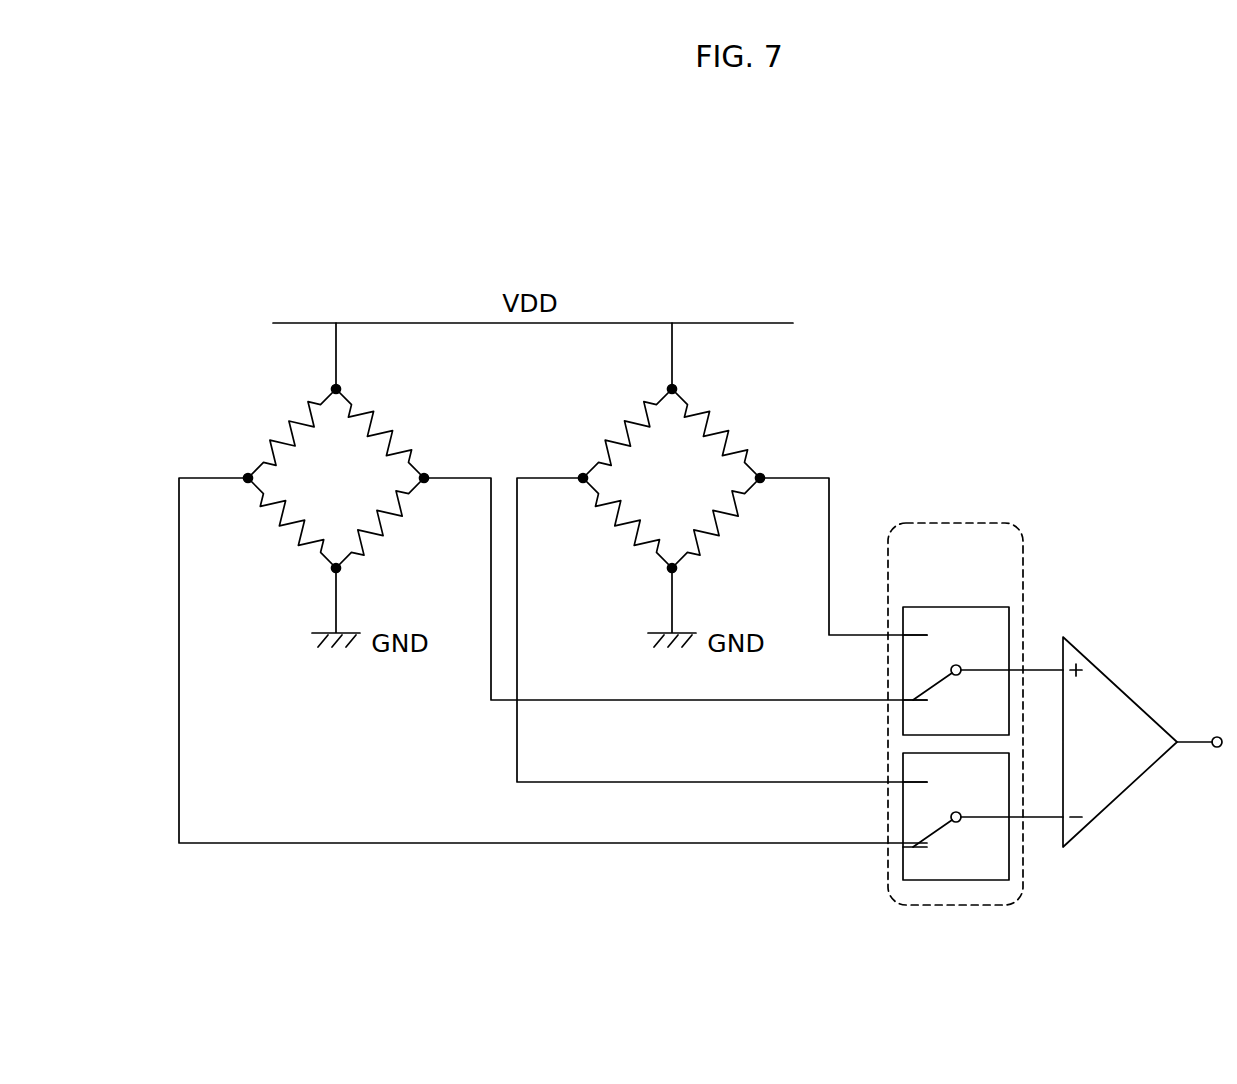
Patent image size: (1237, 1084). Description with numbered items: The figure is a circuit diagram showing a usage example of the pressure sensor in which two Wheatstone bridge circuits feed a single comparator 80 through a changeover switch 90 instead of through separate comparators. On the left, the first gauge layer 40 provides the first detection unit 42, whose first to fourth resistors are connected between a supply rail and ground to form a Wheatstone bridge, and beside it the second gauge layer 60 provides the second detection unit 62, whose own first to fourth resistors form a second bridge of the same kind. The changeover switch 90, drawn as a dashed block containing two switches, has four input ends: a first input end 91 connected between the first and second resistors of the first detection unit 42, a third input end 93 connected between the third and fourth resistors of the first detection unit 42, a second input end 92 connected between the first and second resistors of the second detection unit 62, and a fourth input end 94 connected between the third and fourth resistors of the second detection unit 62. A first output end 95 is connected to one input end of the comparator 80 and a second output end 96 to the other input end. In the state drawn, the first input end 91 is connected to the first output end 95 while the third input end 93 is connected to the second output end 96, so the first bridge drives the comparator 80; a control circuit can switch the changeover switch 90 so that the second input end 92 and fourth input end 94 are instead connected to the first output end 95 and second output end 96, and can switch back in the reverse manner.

The first gauge layer 40 is at (338, 497).
The first detection unit 42 is at (384, 404).
The second gauge layer 60 is at (670, 497).
The second detection unit 62 is at (719, 406).
The comparator 80 is at (1117, 708).
The changeover switch 90 is at (909, 697).
The first input end 91 is at (923, 850).
The second input end 92 is at (923, 780).
The third input end 93 is at (925, 704).
The fourth input end 94 is at (926, 632).
The first output end 95 is at (984, 819).
The second output end 96 is at (981, 668).